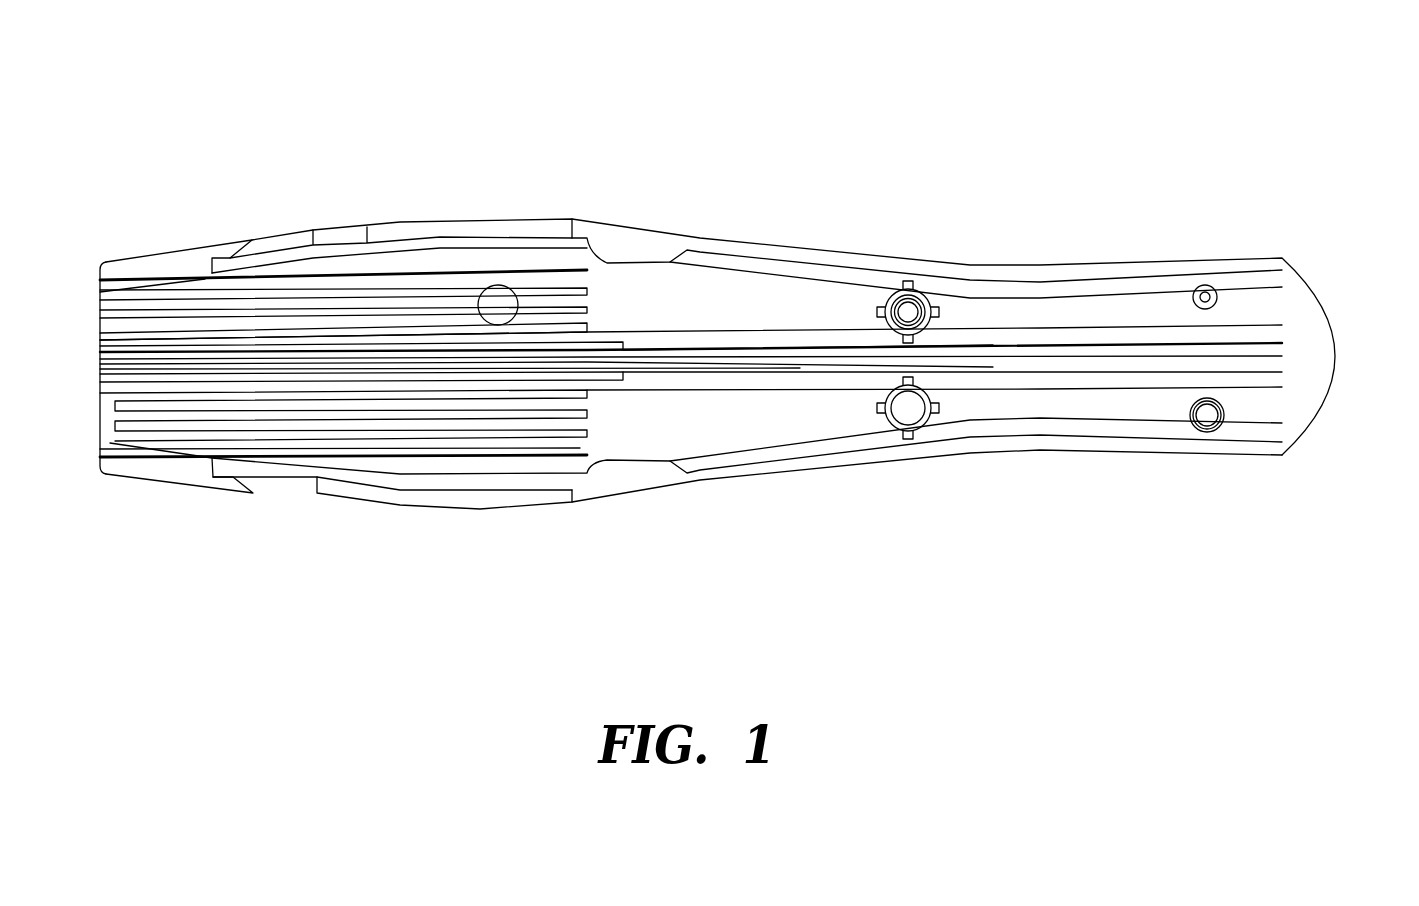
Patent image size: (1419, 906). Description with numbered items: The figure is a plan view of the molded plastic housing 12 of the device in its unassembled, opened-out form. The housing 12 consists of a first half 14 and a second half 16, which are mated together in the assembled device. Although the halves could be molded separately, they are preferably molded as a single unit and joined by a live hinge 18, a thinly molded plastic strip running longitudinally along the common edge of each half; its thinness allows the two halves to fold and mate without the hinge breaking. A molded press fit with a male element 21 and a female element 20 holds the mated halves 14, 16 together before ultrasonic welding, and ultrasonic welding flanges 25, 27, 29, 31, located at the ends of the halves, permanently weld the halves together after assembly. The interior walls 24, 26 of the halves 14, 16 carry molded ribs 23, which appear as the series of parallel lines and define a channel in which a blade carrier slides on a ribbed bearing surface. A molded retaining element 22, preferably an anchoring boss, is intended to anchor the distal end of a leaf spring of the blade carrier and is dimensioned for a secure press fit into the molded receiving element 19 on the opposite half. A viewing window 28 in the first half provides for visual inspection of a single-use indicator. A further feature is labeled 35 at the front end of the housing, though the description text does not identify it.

The molded plastic housing 12 is at (793, 163).
The first half 14 is at (1303, 303).
The second half 16 is at (1303, 410).
The live hinge 18 is at (1317, 350).
The molded receiving element 19 is at (912, 415).
The female element of press fit 20 is at (1208, 423).
The male element of press fit 21 is at (1204, 285).
The molded retaining element 22 is at (908, 310).
The molded ribs 23 is at (127, 323).
The interior wall of first half 24 is at (1030, 307).
The ultrasonic welding flange 25 is at (167, 253).
The interior wall of second half 26 is at (1058, 408).
The ultrasonic welding flange 27 is at (617, 245).
The viewing window 28 is at (497, 300).
The ultrasonic welding flange 29 is at (185, 470).
The ultrasonic welding flange 31 is at (628, 472).
The front end 35 is at (117, 443).